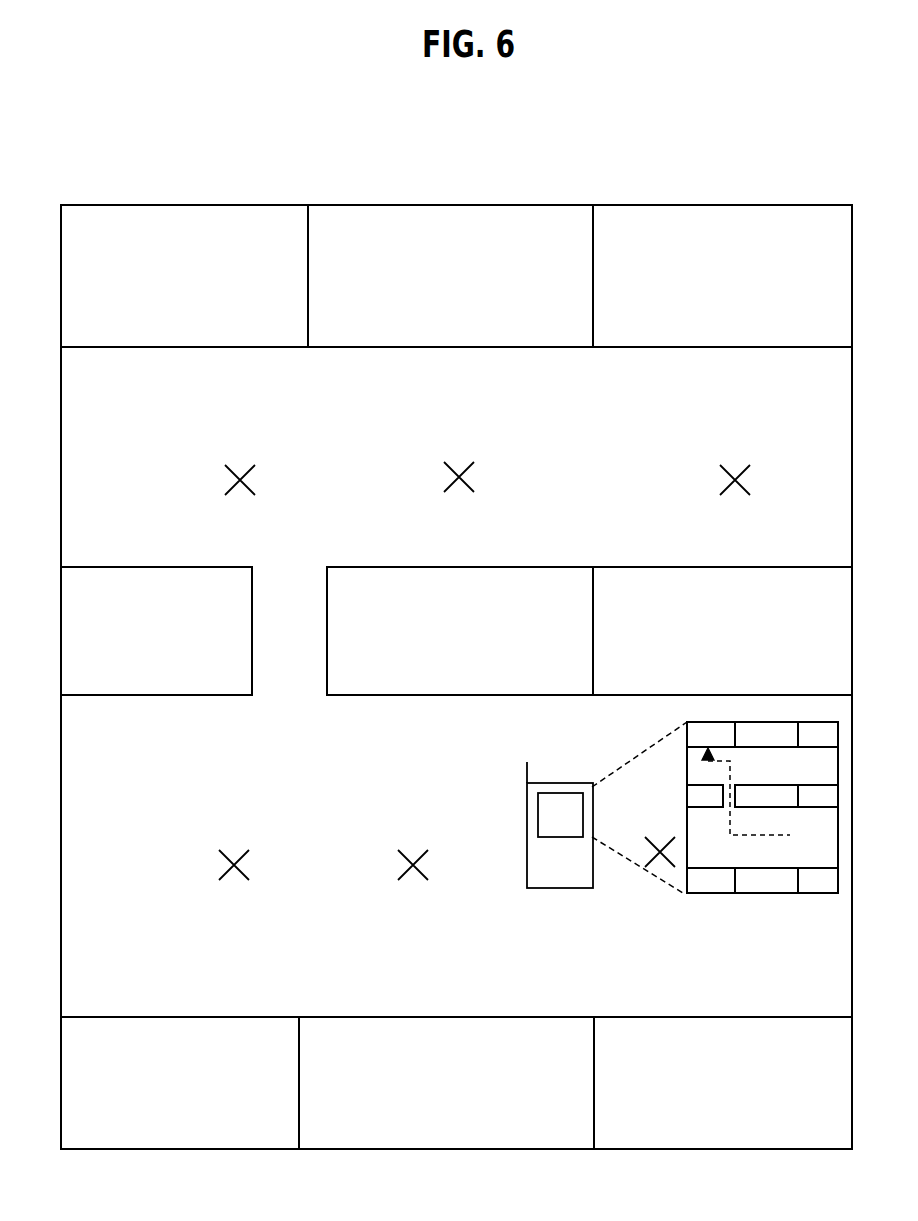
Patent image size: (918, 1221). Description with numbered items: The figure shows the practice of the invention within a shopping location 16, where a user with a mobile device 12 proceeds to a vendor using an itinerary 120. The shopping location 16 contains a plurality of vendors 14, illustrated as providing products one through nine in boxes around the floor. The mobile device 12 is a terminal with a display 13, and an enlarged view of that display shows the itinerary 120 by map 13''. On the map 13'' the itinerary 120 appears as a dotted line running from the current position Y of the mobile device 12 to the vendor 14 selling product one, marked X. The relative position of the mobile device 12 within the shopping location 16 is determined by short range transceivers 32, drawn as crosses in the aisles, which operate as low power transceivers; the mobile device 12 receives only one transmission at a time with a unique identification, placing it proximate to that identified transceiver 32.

The shopping location 16 is at (453, 188).
The vendors 14 is at (244, 335).
The short range transceivers 32 is at (256, 479).
The mobile device 12 is at (527, 843).
The display 13 is at (525, 813).
The map 13'' is at (715, 832).
The itinerary 120 is at (735, 766).